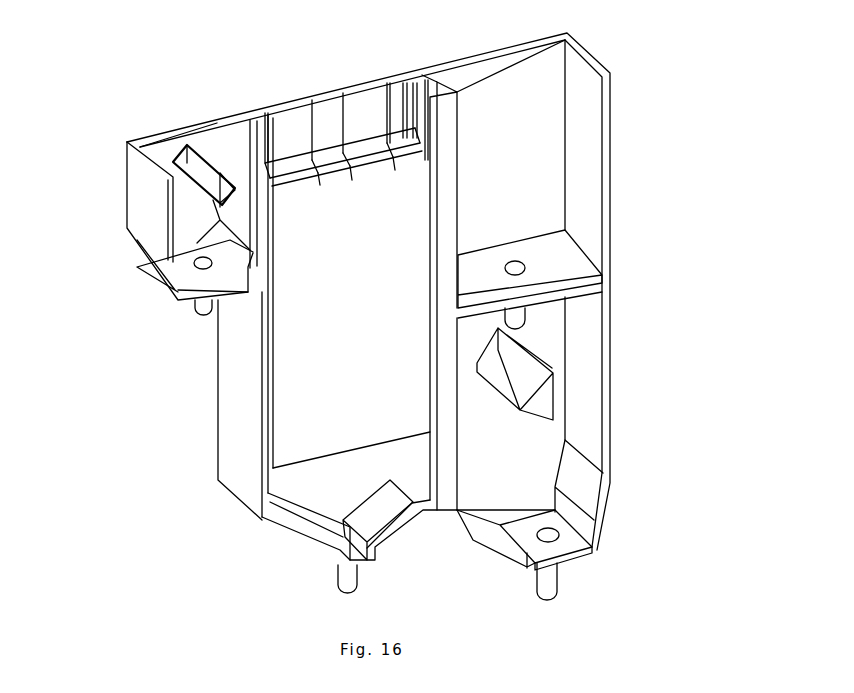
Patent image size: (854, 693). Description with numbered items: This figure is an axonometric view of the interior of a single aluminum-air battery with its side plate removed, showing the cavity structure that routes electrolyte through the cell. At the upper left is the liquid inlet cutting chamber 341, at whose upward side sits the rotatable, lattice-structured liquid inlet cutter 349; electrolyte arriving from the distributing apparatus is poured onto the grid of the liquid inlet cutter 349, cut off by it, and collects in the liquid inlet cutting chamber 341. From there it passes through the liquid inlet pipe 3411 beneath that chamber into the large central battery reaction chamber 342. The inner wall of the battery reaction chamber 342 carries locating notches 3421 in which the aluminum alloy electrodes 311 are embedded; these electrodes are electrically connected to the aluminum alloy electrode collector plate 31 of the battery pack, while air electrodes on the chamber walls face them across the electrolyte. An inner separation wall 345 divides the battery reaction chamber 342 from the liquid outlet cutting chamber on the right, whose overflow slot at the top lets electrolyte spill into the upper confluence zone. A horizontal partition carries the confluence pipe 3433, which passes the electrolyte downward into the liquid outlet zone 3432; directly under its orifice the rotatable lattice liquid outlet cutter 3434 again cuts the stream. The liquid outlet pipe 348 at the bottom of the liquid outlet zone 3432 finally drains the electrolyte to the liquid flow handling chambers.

The aluminum alloy electrode collector plate 31 is at (251, 239).
The aluminum alloy electrode 311 is at (340, 308).
The liquid inlet cutting chamber 341 is at (138, 217).
The liquid inlet pipe 3411 is at (189, 316).
The battery reaction chamber 342 is at (231, 378).
The locating notch 3421 is at (298, 145).
The liquid outlet zone 3432 is at (612, 458).
The confluence pipe 3433 is at (525, 328).
The liquid outlet cutter 3434 is at (555, 397).
The inner separation wall 345 is at (528, 181).
The liquid outlet pipe 348 is at (550, 594).
The liquid inlet cutter 349 is at (190, 170).